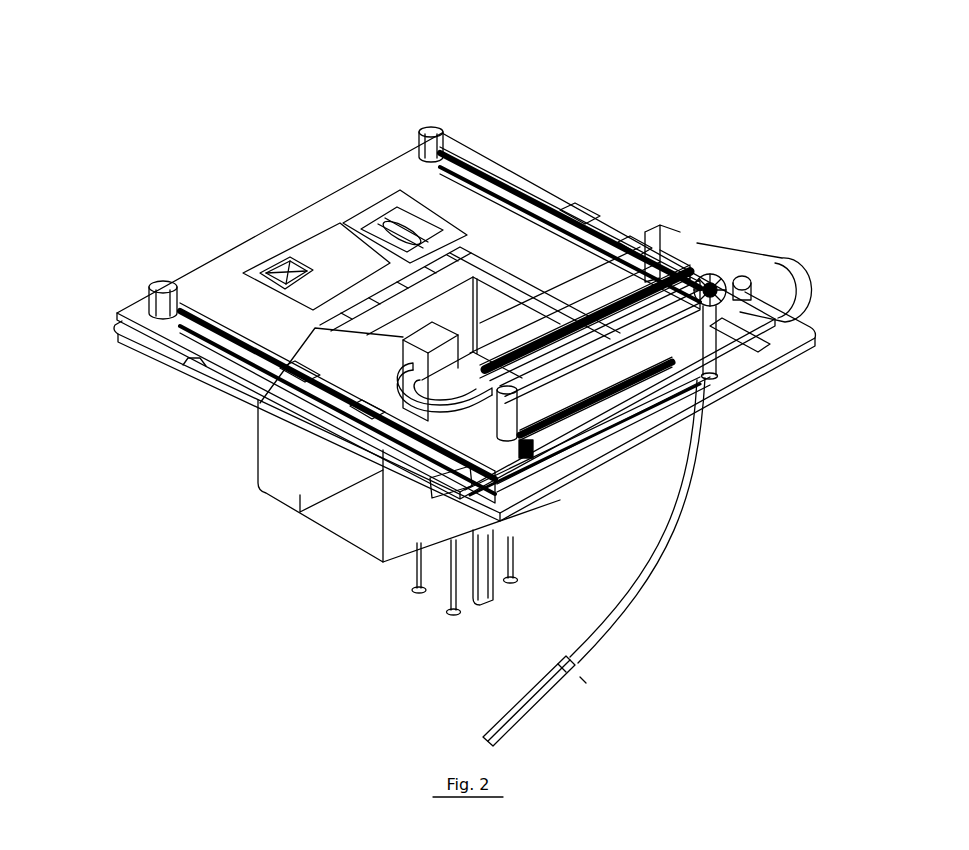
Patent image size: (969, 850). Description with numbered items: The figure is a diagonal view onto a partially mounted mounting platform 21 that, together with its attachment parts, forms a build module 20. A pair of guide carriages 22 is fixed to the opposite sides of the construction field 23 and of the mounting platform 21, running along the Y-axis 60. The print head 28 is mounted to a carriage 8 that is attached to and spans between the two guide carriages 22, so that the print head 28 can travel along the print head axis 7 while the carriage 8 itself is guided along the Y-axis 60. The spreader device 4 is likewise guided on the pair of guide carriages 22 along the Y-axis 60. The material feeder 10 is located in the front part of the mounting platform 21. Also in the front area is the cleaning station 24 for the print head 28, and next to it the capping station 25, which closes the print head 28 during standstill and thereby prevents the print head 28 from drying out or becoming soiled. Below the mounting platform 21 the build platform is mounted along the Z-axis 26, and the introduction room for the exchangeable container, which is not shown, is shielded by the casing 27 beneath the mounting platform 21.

The build module 20 is at (383, 50).
The mounting platform 21 is at (223, 287).
The guide carriages 22 is at (557, 180).
The construction field 23 is at (497, 307).
The cleaning station 24 is at (400, 190).
The capping station 25 is at (328, 238).
The Z-axis 26 is at (453, 577).
The casing 27 is at (277, 467).
The print head 28 is at (250, 315).
The Y-axis 60 is at (520, 170).
The print head axis 7 is at (662, 235).
The carriage 8 is at (577, 463).
The material feeder 10 is at (655, 550).
The spreader device 4 is at (445, 490).